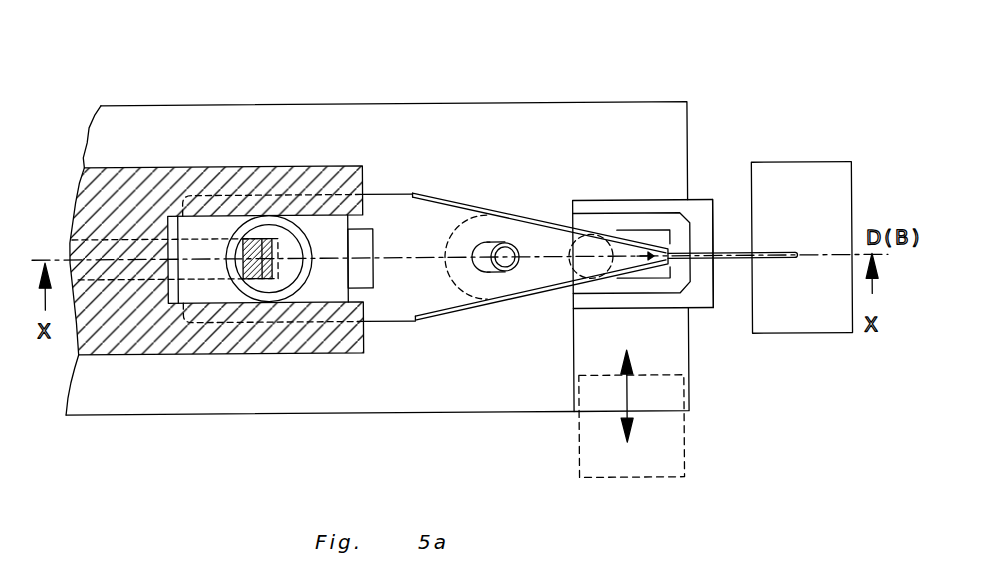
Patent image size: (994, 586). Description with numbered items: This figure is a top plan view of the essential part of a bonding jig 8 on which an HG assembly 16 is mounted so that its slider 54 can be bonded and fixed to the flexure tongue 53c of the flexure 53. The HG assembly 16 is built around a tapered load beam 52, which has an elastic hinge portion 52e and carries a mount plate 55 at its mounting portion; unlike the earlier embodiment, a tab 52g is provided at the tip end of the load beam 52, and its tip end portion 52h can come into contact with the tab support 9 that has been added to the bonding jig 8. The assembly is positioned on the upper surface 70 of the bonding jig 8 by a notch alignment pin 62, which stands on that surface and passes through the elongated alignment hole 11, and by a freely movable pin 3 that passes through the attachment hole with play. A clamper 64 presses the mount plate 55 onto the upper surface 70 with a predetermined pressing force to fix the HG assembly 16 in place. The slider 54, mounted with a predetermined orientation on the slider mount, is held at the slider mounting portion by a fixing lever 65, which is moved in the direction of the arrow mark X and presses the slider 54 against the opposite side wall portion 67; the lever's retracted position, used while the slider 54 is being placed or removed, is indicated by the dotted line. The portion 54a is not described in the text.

The bonding jig 8 is at (480, 68).
The upper surface of the bonding jig 70 is at (538, 107).
The clamper 64 is at (137, 185).
The movable pin 3 is at (250, 236).
The mount plate 55 is at (325, 287).
The HG assembly 16 is at (405, 170).
The load beam 52 is at (432, 295).
The hinge portion 52e is at (382, 312).
The tab 52g is at (733, 247).
The tip end portion of the tab 52h is at (797, 261).
The alignment hole 11 is at (483, 250).
The notch alignment pin 62 is at (513, 250).
The flexure 53 is at (620, 223).
The flexure tongue 53c is at (612, 279).
The opposite side wall portion 67 is at (640, 202).
The slider 54 is at (703, 309).
The slider portion 54a is at (705, 292).
The fixing lever 65 is at (670, 392).
The tab support 9 is at (825, 164).